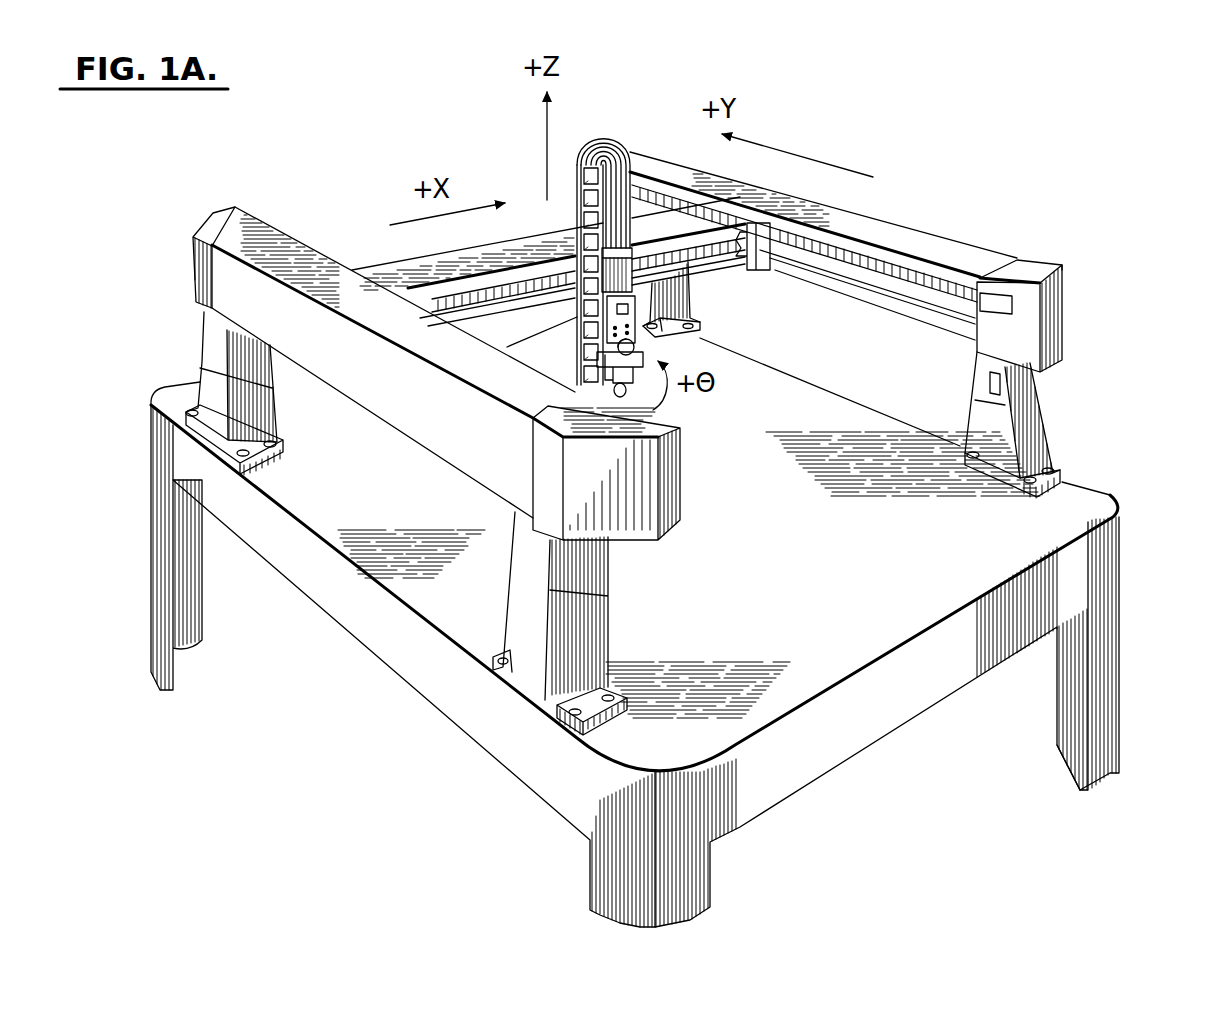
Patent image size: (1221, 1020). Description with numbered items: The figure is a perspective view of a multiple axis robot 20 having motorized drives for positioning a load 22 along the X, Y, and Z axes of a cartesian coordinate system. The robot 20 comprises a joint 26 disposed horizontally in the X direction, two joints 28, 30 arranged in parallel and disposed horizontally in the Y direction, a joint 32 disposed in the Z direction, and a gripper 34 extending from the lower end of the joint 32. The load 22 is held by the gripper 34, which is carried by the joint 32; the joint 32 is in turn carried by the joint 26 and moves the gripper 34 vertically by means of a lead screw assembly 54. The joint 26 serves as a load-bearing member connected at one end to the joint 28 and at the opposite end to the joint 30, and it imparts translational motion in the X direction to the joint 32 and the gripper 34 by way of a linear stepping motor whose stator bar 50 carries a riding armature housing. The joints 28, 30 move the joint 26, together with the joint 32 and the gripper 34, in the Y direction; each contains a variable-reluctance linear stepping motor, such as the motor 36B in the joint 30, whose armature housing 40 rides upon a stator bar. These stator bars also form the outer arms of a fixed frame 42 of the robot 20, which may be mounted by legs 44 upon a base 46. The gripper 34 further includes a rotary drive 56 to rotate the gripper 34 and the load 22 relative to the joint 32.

The multiple axis robot 20 is at (1106, 308).
The load 22 is at (540, 415).
The joint 26 is at (386, 262).
The joint 28 is at (396, 448).
The joint 30 is at (966, 228).
The joint 32 is at (572, 206).
The gripper 34 is at (598, 385).
The variable-reluctance linear stepping motor 36B is at (766, 262).
The armature housing 40 is at (577, 278).
The fixed frame 42 is at (622, 598).
The legs 44 is at (203, 338).
The base 46 is at (977, 663).
The stator bar 50 is at (474, 302).
The lead screw assembly 54 is at (577, 325).
The rotary drive 56 is at (636, 344).